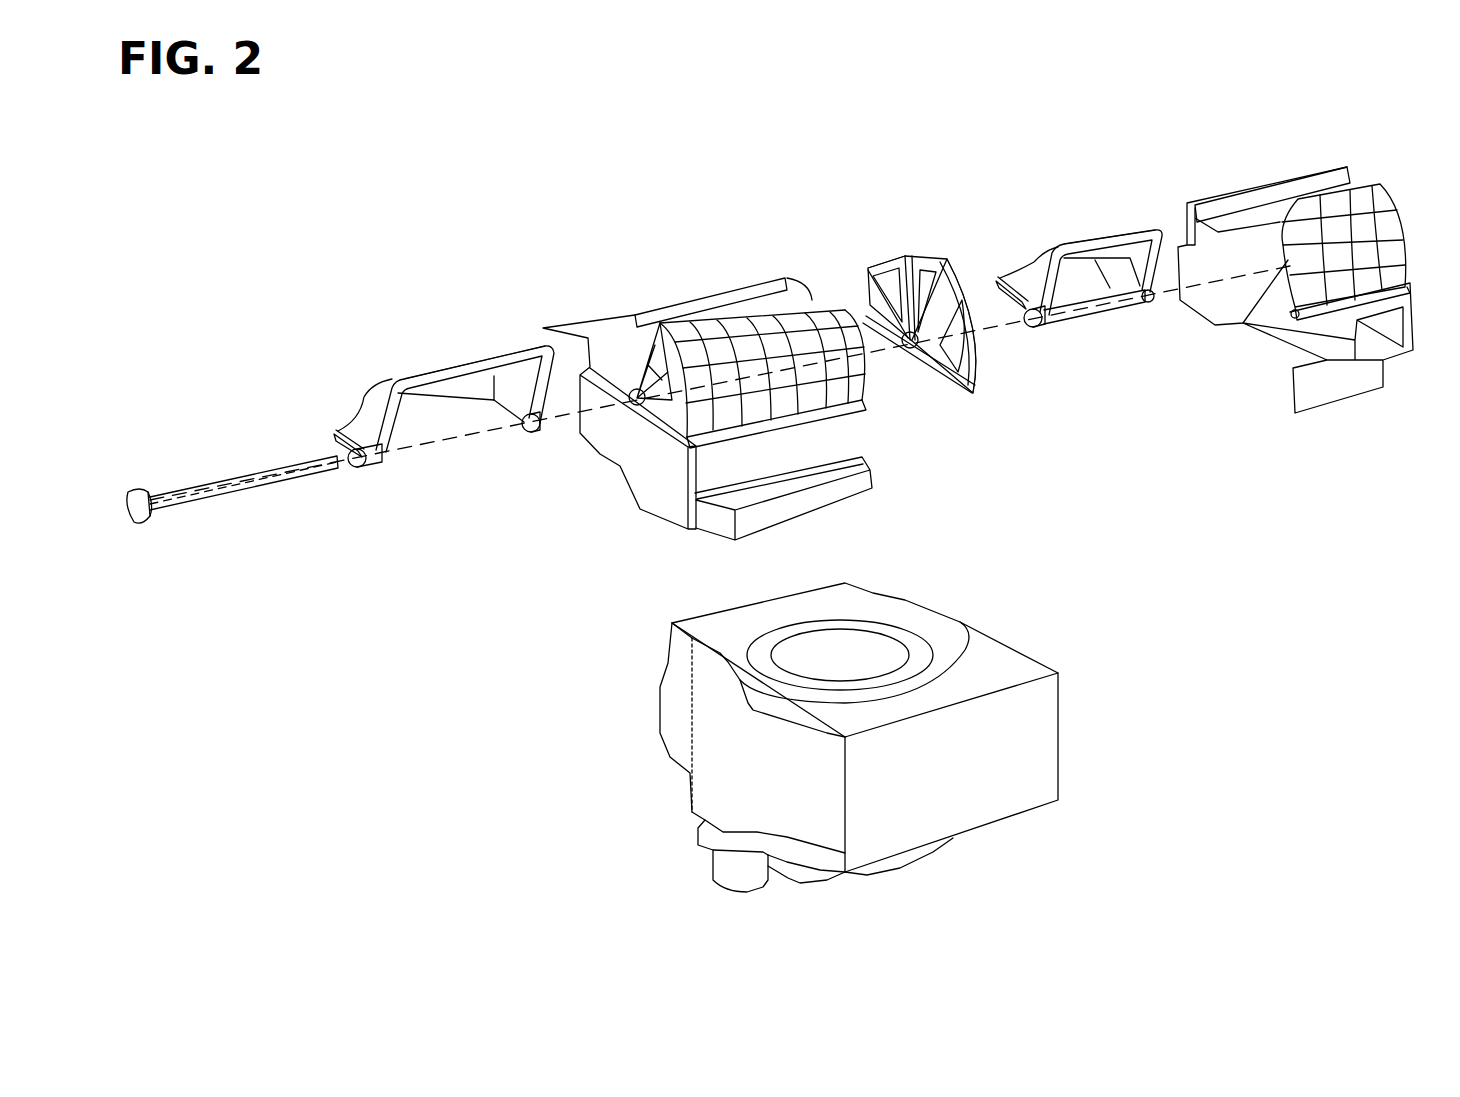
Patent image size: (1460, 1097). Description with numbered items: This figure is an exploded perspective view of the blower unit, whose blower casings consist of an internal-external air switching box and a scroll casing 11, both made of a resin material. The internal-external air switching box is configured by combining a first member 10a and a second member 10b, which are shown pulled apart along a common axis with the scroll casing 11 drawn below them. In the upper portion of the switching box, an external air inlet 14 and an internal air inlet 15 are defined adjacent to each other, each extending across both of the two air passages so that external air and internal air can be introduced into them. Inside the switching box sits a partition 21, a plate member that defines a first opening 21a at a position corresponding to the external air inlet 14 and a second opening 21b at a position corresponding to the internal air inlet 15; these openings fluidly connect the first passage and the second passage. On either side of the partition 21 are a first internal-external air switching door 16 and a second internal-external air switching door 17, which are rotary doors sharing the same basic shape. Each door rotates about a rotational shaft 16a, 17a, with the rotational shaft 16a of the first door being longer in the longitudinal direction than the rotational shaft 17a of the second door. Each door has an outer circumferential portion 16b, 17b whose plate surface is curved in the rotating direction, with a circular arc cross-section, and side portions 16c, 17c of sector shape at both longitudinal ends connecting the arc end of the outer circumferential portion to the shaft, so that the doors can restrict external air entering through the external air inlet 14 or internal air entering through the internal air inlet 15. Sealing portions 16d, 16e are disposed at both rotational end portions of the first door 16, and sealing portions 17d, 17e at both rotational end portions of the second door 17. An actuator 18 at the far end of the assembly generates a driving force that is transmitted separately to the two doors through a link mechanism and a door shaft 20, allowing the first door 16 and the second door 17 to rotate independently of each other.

The first member 10a is at (737, 282).
The second member 10b is at (1305, 163).
The scroll casing 11 is at (1060, 738).
The external air inlet 14 is at (655, 300).
The internal air inlet 15 is at (826, 378).
The first internal-external air switching door 16 is at (424, 363).
The rotational shaft 16a is at (535, 432).
The outer circumferential portion 16b is at (366, 393).
The side portions 16c is at (372, 450).
The sealing portion 16d is at (338, 430).
The sealing portion 16e is at (466, 362).
The second internal-external air switching door 17 is at (1130, 225).
The rotational shaft 17a is at (1036, 328).
The outer circumferential portion 17b is at (1033, 262).
The side portions 17c is at (1060, 322).
The sealing portion 17d is at (1003, 278).
The sealing portion 17e is at (1087, 240).
The actuator 18 is at (130, 520).
The door shaft 20 is at (222, 482).
The partition 21 is at (912, 255).
The first opening 21a is at (880, 266).
The second opening 21b is at (950, 260).